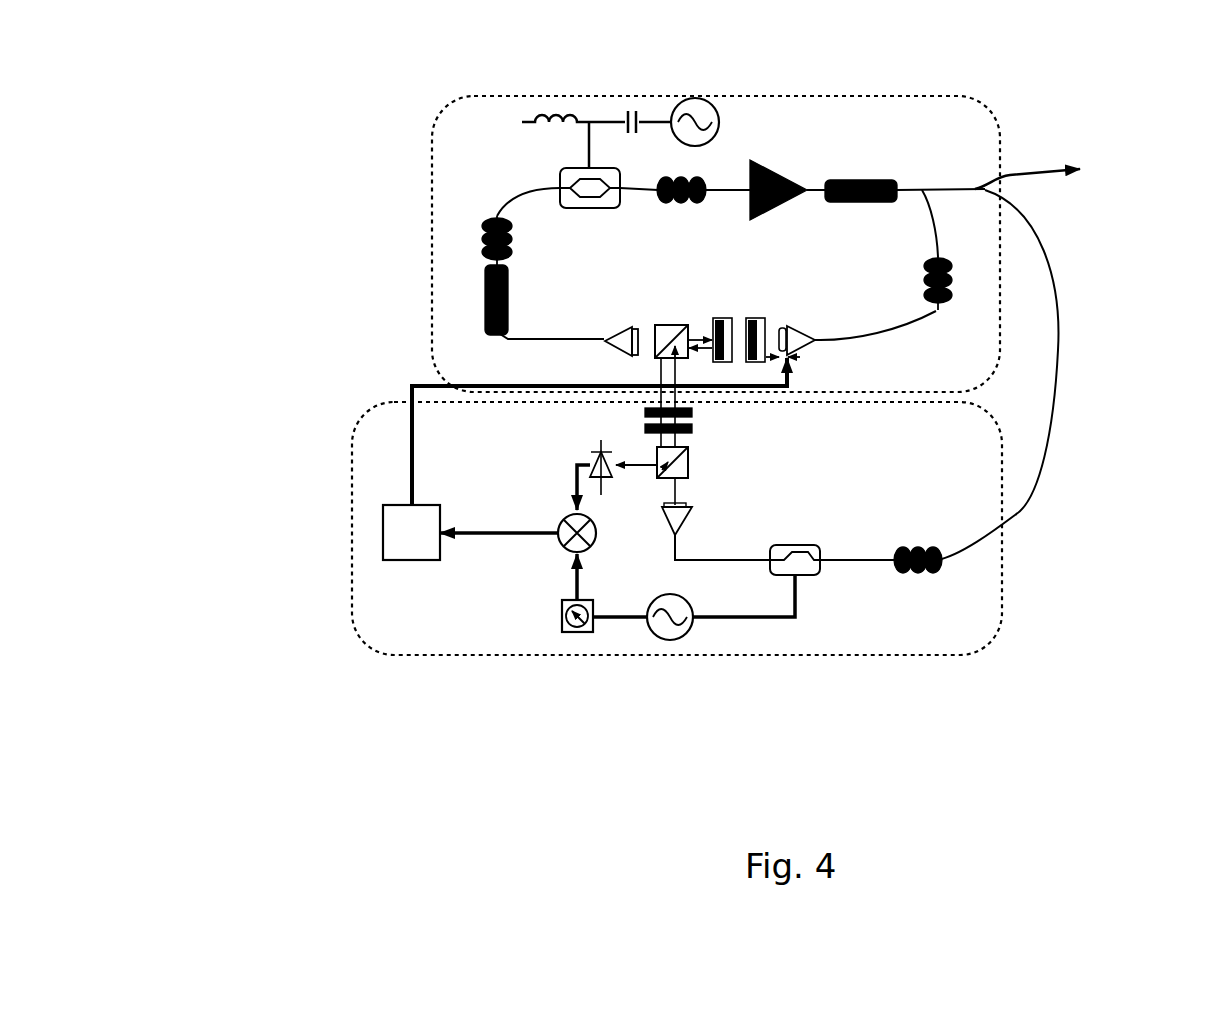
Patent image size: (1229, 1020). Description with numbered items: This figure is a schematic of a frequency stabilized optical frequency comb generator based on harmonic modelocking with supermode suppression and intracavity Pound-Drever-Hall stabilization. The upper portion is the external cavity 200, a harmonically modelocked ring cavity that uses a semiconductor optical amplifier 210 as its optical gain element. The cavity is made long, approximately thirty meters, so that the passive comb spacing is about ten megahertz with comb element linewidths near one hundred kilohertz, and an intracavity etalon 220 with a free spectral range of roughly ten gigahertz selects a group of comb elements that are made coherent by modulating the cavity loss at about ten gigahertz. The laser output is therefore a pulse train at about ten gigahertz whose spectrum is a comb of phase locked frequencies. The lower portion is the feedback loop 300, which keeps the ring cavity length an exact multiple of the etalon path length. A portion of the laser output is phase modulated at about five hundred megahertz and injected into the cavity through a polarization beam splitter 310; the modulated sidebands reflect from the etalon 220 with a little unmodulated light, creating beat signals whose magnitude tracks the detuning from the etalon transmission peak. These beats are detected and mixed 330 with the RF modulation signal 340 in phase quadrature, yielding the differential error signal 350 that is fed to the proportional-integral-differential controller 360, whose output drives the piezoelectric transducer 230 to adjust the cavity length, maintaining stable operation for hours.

The external cavity 200 is at (437, 128).
The semiconductor optical amplifier 210 is at (792, 172).
The intracavity etalon 220 is at (746, 304).
The piezoelectric transducer 230 is at (834, 351).
The feedback loop 300 is at (352, 437).
The polarization beam splitter 310 is at (750, 442).
The mixer 330 is at (549, 549).
The RF modulation signal 340 is at (571, 639).
The differential error signal 350 is at (501, 534).
The proportional-integral-differential controller 360 is at (380, 527).